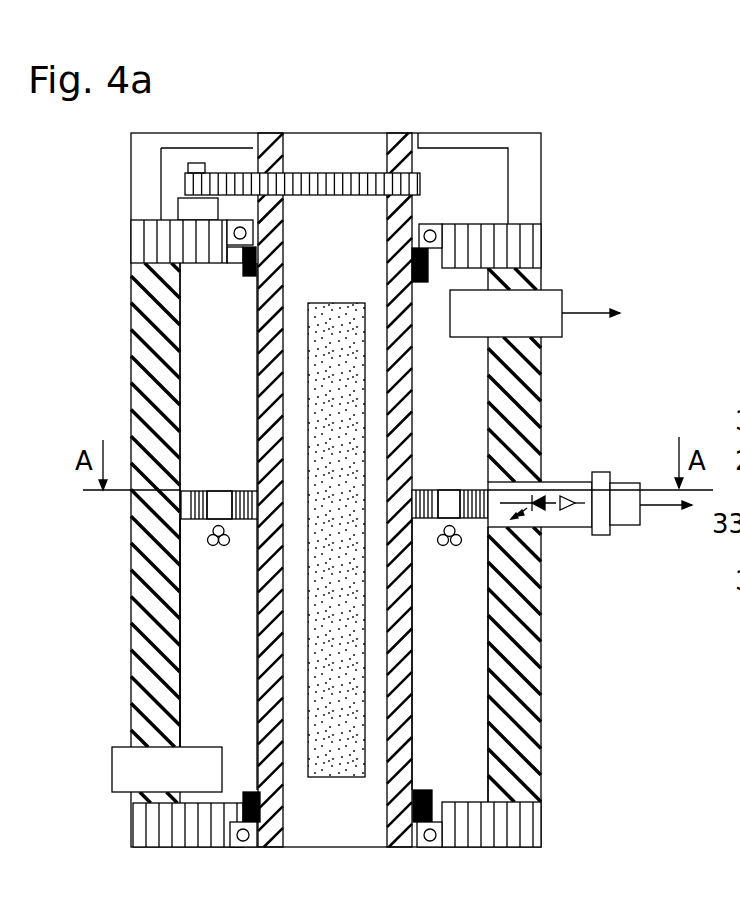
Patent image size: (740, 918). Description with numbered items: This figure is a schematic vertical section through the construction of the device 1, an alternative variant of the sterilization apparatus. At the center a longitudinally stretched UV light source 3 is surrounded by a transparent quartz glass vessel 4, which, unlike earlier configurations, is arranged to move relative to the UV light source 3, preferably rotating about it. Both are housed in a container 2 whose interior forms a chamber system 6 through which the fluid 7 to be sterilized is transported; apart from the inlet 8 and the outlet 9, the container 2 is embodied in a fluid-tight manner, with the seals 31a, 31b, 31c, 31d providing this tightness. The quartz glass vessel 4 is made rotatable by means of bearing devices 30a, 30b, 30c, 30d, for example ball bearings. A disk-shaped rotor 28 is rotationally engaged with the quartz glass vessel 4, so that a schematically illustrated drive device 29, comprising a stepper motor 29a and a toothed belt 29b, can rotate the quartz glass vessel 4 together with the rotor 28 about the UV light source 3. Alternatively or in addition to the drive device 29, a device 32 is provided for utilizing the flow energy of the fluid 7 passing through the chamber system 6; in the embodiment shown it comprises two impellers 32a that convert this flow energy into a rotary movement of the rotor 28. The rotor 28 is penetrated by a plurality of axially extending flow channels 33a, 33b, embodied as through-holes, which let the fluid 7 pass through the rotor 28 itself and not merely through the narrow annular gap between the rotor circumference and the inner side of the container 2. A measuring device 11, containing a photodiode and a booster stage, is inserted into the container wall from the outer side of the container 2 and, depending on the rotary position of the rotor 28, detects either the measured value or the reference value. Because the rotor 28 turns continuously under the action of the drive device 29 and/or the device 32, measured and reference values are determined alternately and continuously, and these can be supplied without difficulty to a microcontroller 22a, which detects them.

The device 1 is at (598, 138).
The container 2 is at (160, 722).
The UV light source 3 is at (323, 385).
The transparent quartz glass vessel 4 is at (263, 417).
The chamber system 6 is at (237, 597).
The fluid 7 is at (228, 455).
The inlet 8 is at (112, 770).
The outlet 9 is at (533, 305).
The measuring device 11 is at (630, 540).
The microcontroller 22a is at (667, 520).
The disk-shaped rotor 28 is at (192, 509).
The drive device 29 is at (212, 162).
The stepper motor 29a is at (192, 212).
The toothed belt 29b is at (338, 178).
The bearing device 30a is at (240, 228).
The bearing device 30b is at (431, 230).
The bearing device 30c is at (237, 835).
The bearing device 30d is at (440, 836).
The seal 31a is at (247, 275).
The seal 31b is at (430, 268).
The seal 31c is at (243, 792).
The seal 31d is at (432, 792).
The device for utilizing the flow energy 32 is at (357, 594).
The impeller 32a is at (208, 548).
The flow channel 33a is at (220, 515).
The flow channel 33b is at (447, 513).